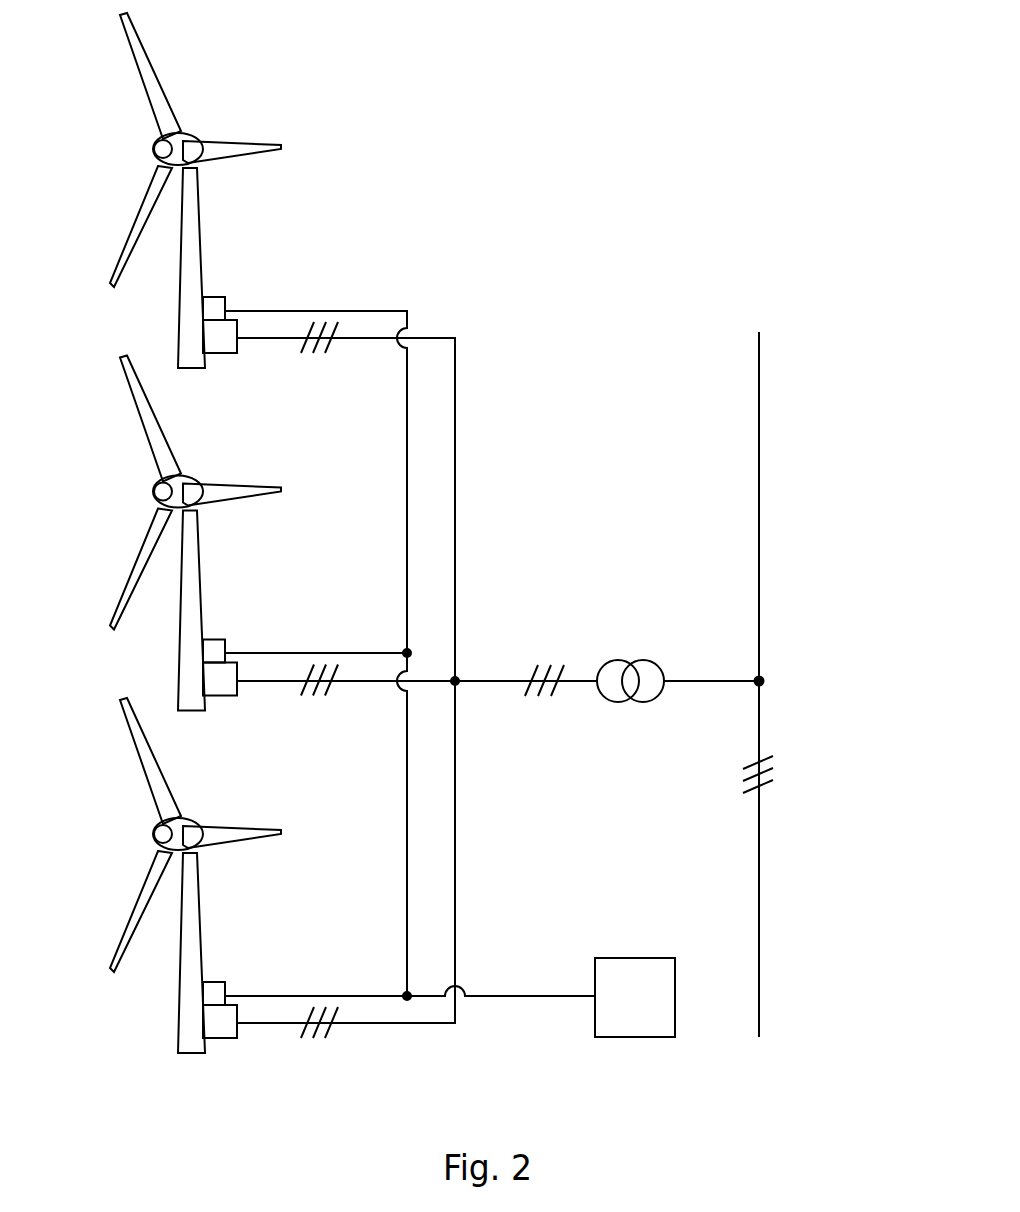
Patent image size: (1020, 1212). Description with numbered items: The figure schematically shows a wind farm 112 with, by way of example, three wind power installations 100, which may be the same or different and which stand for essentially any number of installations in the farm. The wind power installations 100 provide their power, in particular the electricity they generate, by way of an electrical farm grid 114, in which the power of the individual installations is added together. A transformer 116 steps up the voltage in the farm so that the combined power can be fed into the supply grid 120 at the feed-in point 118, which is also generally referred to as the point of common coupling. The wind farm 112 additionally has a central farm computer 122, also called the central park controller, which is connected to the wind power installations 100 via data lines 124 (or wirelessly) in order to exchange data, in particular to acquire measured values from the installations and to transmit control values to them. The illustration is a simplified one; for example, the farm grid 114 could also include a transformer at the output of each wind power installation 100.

The wind power installation 100 is at (187, 260).
The wind farm 112 is at (580, 195).
The electrical farm grid 114 is at (482, 681).
The transformer 116 is at (643, 648).
The feed-in point 118 is at (768, 665).
The supply grid 120 is at (760, 405).
The central farm computer 122 is at (627, 958).
The data lines 124 is at (407, 825).